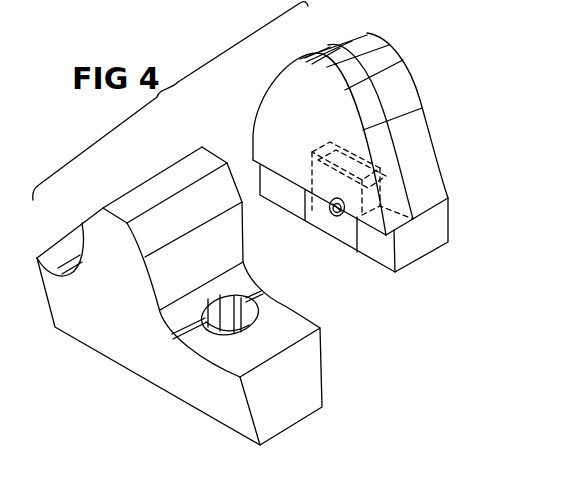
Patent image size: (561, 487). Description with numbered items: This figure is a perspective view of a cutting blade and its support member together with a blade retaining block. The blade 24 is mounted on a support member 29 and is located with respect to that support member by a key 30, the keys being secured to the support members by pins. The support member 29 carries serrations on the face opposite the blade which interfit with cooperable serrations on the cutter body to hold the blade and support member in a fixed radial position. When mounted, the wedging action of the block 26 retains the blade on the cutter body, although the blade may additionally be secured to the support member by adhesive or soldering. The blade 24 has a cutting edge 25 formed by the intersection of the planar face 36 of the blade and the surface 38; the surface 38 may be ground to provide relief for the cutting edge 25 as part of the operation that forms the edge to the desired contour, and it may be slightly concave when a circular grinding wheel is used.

The blade 24 is at (377, 114).
The cutting edge 25 is at (359, 146).
The block 26 is at (123, 350).
The support member 29 is at (393, 66).
The key 30 is at (347, 228).
The planar face 36 is at (283, 127).
The surface 38 is at (322, 50).